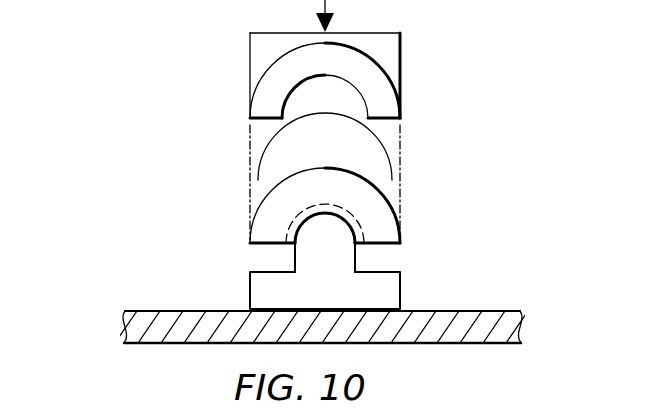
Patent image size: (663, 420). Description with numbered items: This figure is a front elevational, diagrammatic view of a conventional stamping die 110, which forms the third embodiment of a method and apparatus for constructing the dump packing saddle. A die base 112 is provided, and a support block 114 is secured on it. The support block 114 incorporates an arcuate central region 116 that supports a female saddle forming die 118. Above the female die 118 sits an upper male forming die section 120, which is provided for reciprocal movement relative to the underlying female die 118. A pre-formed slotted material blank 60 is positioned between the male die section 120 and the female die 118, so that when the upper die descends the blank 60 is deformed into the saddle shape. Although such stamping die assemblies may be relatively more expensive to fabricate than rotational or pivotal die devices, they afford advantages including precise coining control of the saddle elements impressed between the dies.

The pre-formed slotted material blank 60 is at (258, 163).
The stamping die 110 is at (440, 96).
The die base 112 is at (455, 310).
The support block 114 is at (380, 292).
The arcuate central region 116 is at (333, 262).
The female saddle forming die 118 is at (365, 198).
The upper male forming die section 120 is at (400, 53).